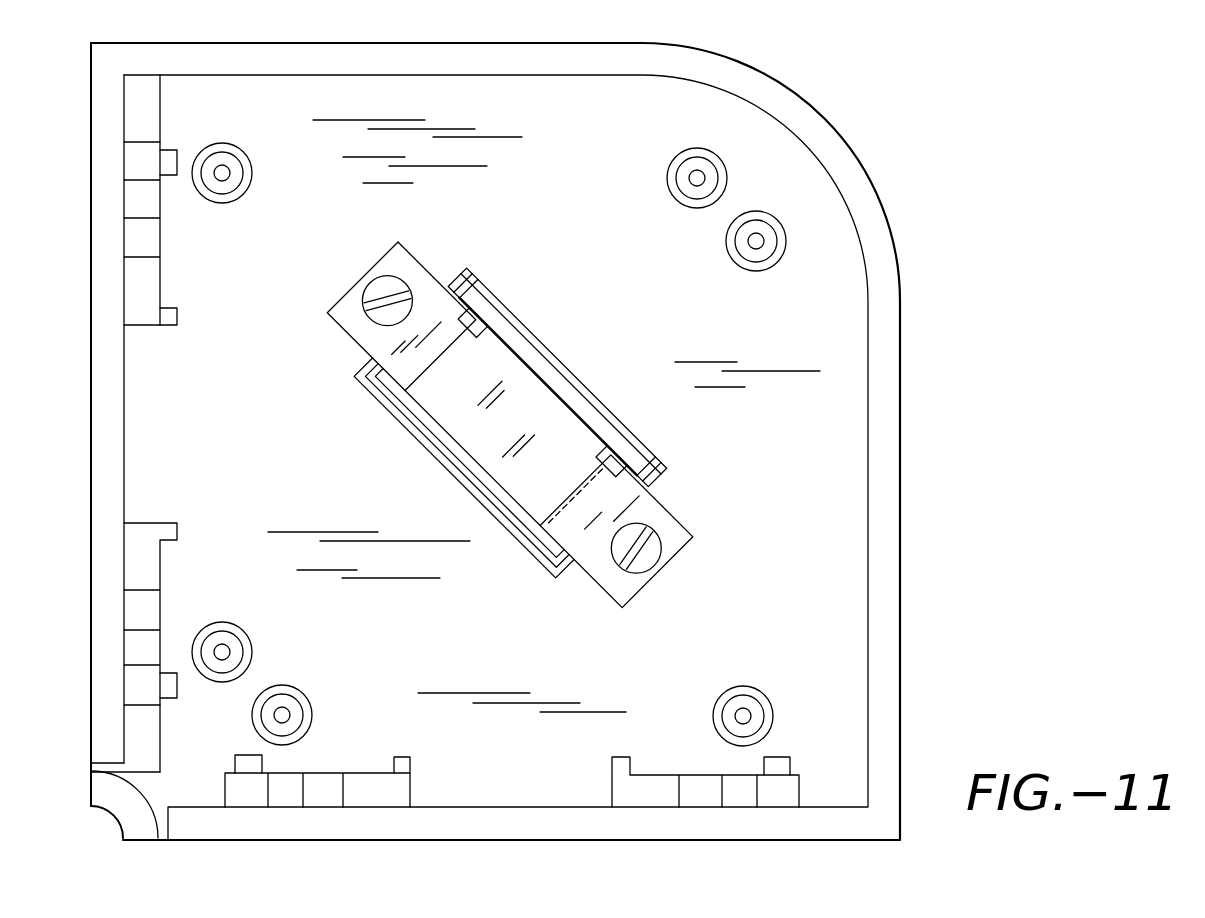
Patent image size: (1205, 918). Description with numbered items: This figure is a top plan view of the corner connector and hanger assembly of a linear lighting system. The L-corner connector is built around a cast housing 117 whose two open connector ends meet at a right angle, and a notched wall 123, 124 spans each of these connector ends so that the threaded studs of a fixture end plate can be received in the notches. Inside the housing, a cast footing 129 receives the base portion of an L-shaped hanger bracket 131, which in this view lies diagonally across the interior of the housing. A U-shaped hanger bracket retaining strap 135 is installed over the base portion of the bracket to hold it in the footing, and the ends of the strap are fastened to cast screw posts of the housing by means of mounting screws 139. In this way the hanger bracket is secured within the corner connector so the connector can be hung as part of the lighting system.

The cast housing 117 is at (885, 541).
The notched wall 123 is at (148, 284).
The notched wall 124 is at (373, 790).
The cast footing 129 is at (518, 527).
The L-shaped hanger bracket 131 is at (489, 302).
The U-shaped hanger bracket retaining strap 135 is at (432, 300).
The mounting screws 139 is at (382, 289).